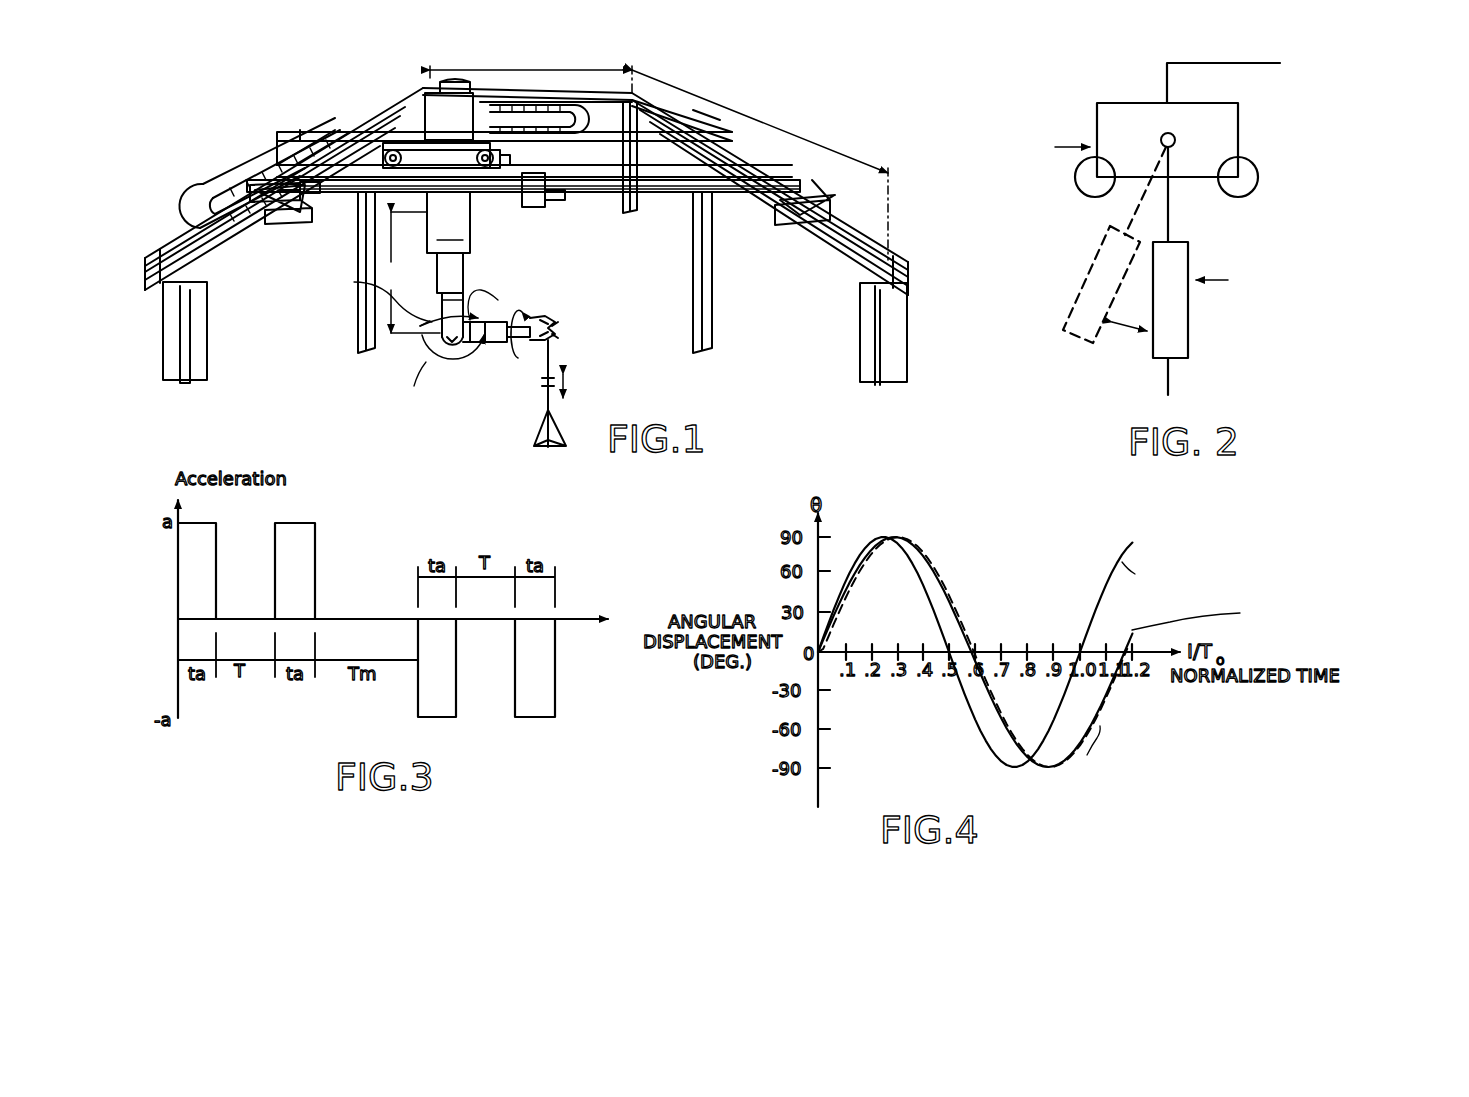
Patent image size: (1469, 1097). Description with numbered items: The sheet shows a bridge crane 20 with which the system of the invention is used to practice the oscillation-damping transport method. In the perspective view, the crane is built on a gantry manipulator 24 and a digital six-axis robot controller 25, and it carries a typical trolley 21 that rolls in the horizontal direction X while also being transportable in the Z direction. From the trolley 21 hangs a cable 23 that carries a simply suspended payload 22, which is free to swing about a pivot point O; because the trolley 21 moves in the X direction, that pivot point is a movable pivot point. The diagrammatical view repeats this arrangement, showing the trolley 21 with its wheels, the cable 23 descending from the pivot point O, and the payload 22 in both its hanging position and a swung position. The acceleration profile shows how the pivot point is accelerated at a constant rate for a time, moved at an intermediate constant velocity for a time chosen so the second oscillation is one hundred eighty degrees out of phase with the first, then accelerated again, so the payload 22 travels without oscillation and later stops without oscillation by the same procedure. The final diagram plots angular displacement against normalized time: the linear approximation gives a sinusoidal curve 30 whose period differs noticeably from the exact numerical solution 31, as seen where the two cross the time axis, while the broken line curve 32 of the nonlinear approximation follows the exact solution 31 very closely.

In FIG. 1, the bridge crane 20 is at (390, 117).
In FIG. 2, the bridge crane 20 is at (1245, 131).
In FIG. 1, the trolley 21 is at (524, 110).
In FIG. 2, the trolley 21 is at (1148, 134).
In FIG. 1, the payload 22 is at (534, 438).
In FIG. 2, the payload 22 is at (1180, 336).
In FIG. 1, the cable 23 is at (553, 367).
In FIG. 2, the cable 23 is at (1176, 214).
In FIG. 1, the gantry manipulator 24 is at (420, 96).
In FIG. 1, the digital six-axis robot controller 25 is at (476, 232).
In FIG. 4, the sinusoidal curve 30 is at (1112, 582).
In FIG. 4, the exact numerical solution 31 is at (920, 572).
In FIG. 4, the broken line curve 32 is at (1104, 698).